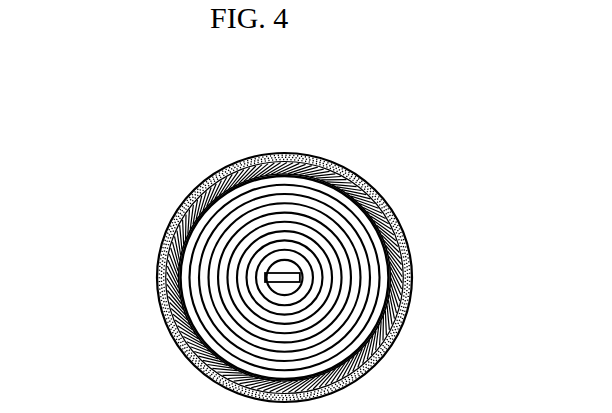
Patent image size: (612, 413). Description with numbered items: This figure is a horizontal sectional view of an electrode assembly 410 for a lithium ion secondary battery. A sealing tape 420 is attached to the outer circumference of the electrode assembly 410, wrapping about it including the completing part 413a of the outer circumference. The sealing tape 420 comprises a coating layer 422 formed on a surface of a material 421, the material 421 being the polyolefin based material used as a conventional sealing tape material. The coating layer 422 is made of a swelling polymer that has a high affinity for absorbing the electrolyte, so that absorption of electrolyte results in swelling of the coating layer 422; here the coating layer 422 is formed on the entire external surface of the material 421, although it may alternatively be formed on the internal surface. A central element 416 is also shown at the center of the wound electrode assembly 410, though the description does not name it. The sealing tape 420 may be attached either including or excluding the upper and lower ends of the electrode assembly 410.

The electrode assembly 410 is at (442, 158).
The completing part 413a is at (227, 277).
The center pin 416 is at (250, 193).
The sealing tape 420 is at (360, 277).
The material 421 is at (326, 277).
The coating layer 422 is at (330, 278).